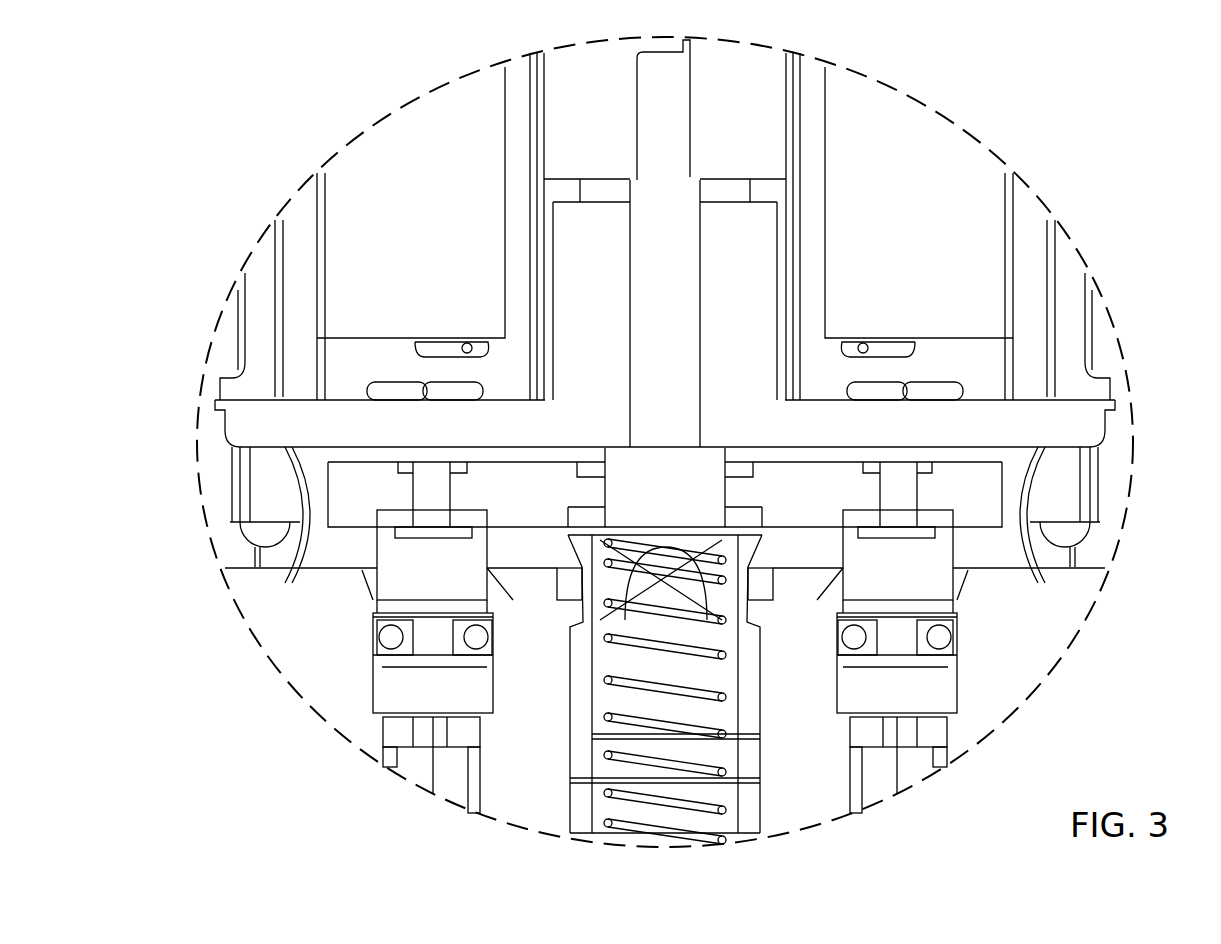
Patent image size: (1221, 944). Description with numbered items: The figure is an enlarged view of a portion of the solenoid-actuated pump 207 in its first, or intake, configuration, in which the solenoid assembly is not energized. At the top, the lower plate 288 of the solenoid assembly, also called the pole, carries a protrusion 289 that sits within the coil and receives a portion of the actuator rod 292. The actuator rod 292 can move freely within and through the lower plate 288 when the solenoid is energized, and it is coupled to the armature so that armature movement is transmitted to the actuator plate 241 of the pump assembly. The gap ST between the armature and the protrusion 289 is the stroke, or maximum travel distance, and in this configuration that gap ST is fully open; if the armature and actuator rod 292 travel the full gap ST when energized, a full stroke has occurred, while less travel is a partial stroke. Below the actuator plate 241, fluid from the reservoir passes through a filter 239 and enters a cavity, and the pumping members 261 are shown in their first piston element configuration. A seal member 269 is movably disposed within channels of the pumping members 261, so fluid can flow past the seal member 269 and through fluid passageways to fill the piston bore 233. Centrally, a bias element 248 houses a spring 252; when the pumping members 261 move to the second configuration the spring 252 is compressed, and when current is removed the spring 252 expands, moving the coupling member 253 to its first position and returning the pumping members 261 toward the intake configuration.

The solenoid-actuated pump 207 is at (987, 70).
The actuator rod 292 is at (665, 140).
The gap ST is at (565, 187).
The protrusion 289 is at (573, 220).
The actuator plate 241 is at (958, 467).
The lower plate 288 is at (1083, 415).
The filter 239 is at (1030, 505).
The pumping members 261 is at (938, 575).
The seal member 269 is at (385, 638).
The piston bore 233 is at (438, 690).
The bias element 248 is at (590, 733).
The spring 252 is at (636, 762).
The coupling member 253 is at (753, 683).